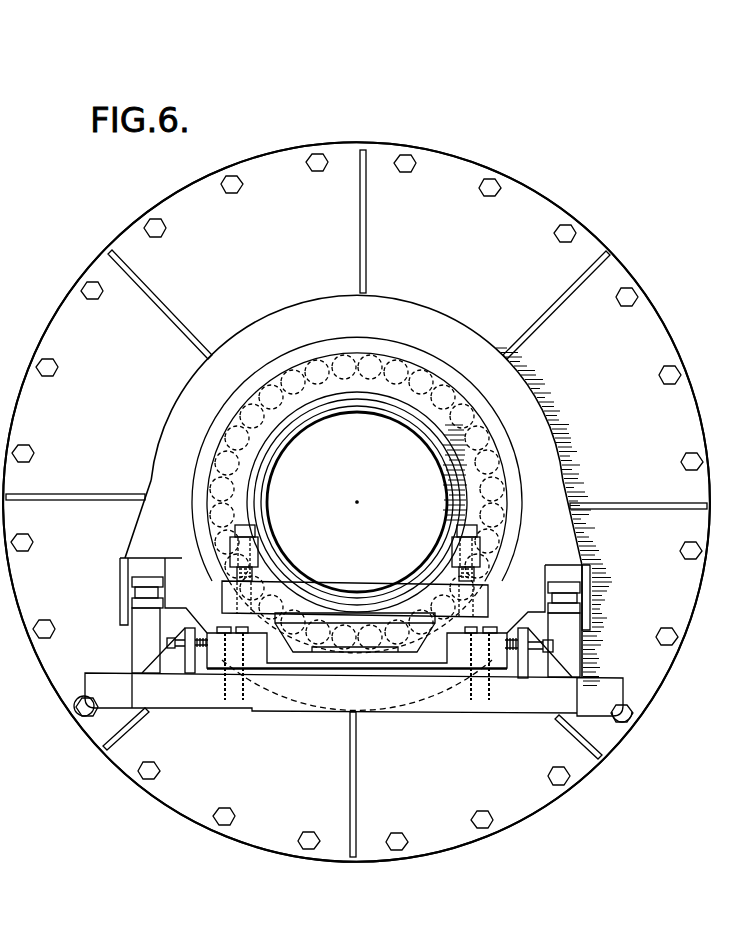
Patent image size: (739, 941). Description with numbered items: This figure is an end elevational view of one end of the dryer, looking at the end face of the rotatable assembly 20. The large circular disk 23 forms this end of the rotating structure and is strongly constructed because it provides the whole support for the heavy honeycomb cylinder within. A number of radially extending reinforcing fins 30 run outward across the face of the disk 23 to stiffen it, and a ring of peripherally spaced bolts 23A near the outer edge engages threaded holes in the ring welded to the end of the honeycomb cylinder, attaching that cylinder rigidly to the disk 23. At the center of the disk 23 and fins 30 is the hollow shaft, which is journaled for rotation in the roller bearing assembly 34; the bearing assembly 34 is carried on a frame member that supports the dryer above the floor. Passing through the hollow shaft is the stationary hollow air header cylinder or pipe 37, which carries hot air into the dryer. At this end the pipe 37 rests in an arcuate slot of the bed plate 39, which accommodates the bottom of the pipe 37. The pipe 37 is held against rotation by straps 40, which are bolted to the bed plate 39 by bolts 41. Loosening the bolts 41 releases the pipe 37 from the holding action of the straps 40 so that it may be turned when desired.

The rotatable assembly 20 is at (578, 202).
The disk 23 is at (173, 804).
The bolts 23A is at (562, 784).
The reinforcing fins 30 is at (366, 240).
The roller bearing assembly 34 is at (279, 301).
The hollow air header cylinder or pipe 37 is at (288, 440).
The bed plate 39 is at (488, 600).
The straps 40 is at (437, 443).
The bolts 41 is at (250, 531).